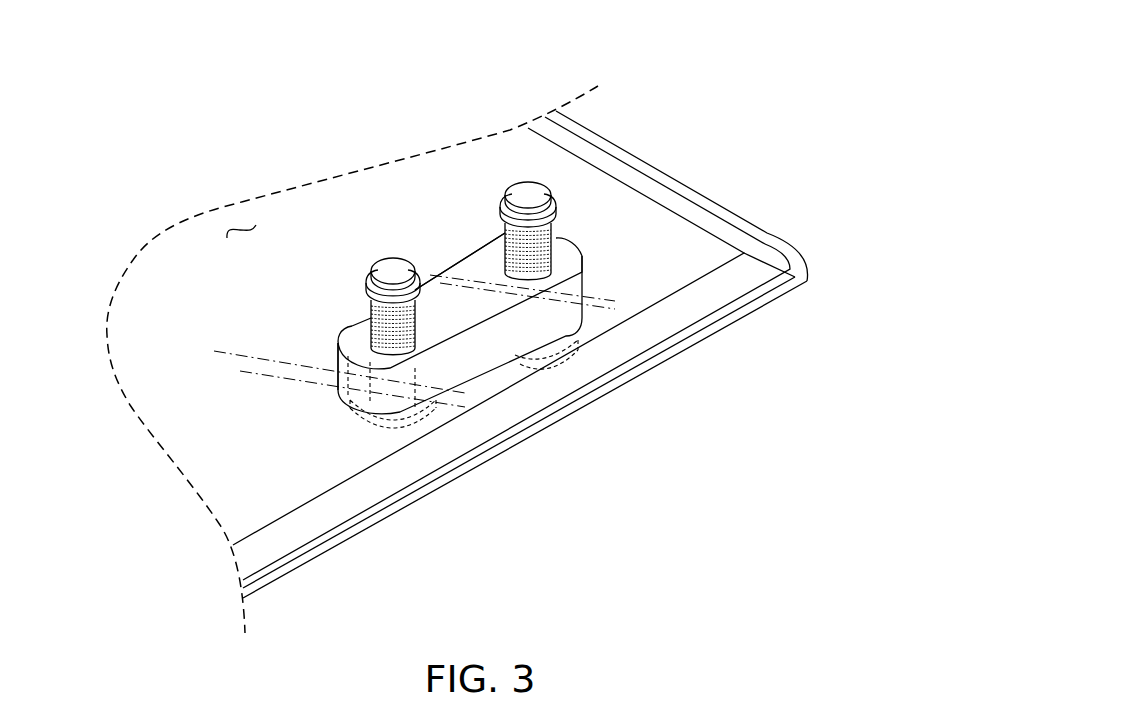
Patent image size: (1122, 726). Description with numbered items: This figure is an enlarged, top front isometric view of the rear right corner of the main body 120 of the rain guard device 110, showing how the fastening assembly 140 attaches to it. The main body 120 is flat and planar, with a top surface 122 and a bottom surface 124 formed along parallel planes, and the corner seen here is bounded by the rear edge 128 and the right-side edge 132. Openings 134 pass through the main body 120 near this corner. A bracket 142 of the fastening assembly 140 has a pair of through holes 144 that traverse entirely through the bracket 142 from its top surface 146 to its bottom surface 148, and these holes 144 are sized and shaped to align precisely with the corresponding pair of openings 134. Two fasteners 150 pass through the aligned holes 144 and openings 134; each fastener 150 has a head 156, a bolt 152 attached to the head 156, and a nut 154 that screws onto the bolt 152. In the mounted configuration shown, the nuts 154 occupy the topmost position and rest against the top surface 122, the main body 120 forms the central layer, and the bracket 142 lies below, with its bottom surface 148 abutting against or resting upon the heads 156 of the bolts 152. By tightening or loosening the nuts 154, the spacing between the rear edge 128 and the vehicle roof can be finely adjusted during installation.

The rain guard device 110 is at (703, 61).
The main body 120 is at (771, 219).
The top surface 122 is at (225, 228).
The bottom surface 124 is at (620, 396).
The rear edge 128 is at (772, 236).
The right-side edge 132 is at (622, 366).
The opening 134 is at (350, 300).
The fastening assembly 140 is at (798, 279).
The bracket 142 is at (343, 356).
The through hole 144 is at (584, 276).
The top surface of bracket 146 is at (490, 246).
The bottom surface of bracket 148 is at (473, 388).
The fastener 150 is at (405, 250).
The bolt 152 is at (392, 266).
The nut 154 is at (372, 312).
The head 156 is at (536, 348).